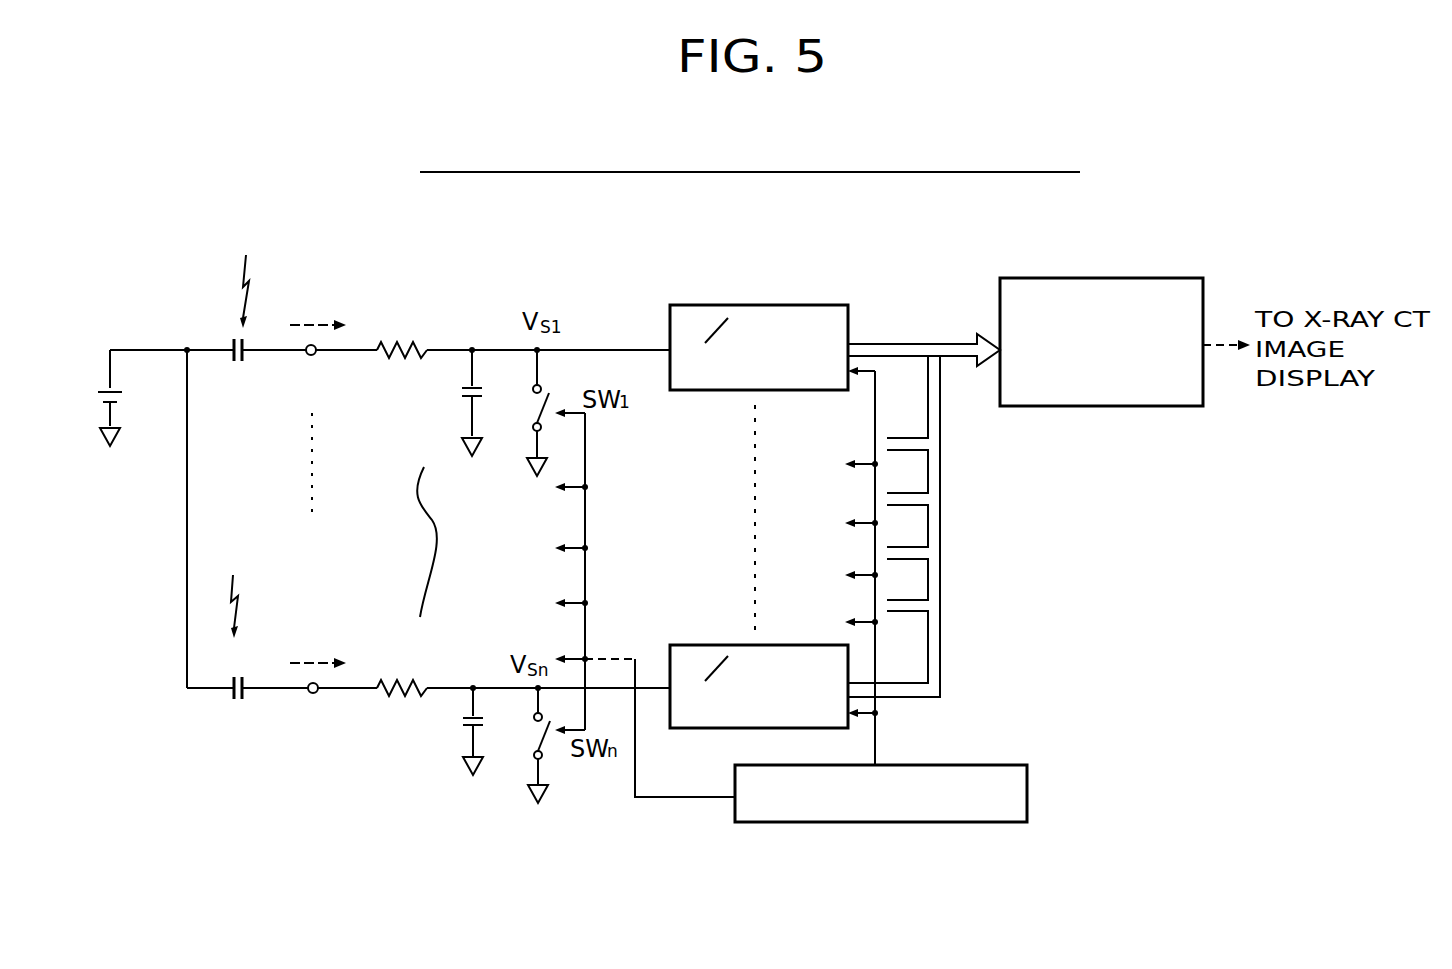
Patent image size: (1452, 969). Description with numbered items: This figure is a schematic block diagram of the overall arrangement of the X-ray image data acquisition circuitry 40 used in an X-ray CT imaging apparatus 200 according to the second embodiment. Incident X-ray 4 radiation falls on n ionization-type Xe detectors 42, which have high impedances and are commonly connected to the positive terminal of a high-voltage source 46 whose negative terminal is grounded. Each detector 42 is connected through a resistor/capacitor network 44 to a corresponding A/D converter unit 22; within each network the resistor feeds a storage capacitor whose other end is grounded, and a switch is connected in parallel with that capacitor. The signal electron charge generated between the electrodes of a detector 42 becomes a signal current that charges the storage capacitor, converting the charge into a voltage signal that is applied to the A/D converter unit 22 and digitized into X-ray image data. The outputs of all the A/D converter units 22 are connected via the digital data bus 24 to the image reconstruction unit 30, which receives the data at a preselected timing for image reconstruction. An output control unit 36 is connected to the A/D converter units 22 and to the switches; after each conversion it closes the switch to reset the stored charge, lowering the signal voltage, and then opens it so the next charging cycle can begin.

The X-ray CT imaging apparatus 200 is at (1216, 102).
The X-ray image data acquisition circuitry 40 is at (750, 154).
The X-ray 4 is at (278, 431).
The X-ray detector 42 is at (253, 340).
The resistor/capacitor network 44 is at (425, 340).
The high-voltage source 46 is at (128, 401).
The A/D converter unit 22 is at (805, 305).
The digital data bus 24 is at (918, 343).
The image reconstruction unit 30 is at (1142, 277).
The output control unit 36 is at (1029, 783).